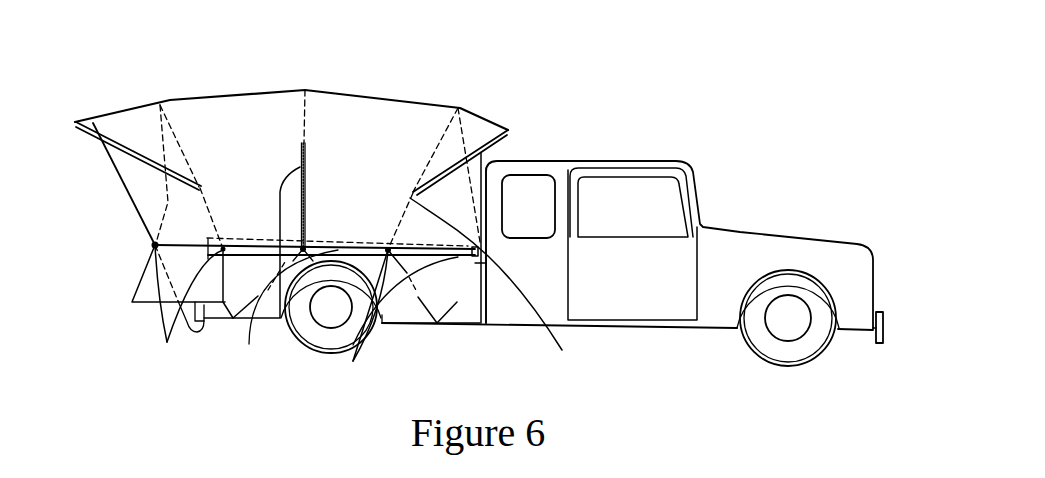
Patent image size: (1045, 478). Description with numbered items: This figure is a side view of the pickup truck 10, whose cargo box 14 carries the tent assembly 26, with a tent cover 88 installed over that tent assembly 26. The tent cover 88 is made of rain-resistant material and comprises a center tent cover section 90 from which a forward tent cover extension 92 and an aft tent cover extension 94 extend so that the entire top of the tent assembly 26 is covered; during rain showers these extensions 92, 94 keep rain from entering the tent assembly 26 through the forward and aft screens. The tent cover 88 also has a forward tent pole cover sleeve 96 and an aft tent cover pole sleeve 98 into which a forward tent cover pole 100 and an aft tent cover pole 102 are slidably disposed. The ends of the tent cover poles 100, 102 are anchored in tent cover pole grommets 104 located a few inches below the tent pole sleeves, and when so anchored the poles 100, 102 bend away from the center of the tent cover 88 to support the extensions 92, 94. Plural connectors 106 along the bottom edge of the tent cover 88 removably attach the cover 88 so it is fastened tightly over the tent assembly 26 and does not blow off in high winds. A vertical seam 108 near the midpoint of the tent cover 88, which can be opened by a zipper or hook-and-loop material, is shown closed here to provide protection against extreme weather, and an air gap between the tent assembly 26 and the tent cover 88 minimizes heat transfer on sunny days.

The pickup truck 10 is at (644, 160).
The cargo box 14 is at (397, 324).
The tent assembly 26 is at (141, 309).
The tent cover 88 is at (347, 88).
The center tent cover section 90 is at (265, 105).
The forward tent cover extension 92 is at (481, 118).
The aft tent cover extension 94 is at (131, 117).
The forward tent pole cover sleeve 96 is at (501, 128).
The aft tent cover pole sleeve 98 is at (93, 121).
The forward tent cover pole 100 is at (480, 156).
The aft tent cover pole 102 is at (137, 157).
The tent cover pole grommets 104 is at (197, 193).
The connectors 106 is at (166, 343).
The vertical seam 108 is at (268, 290).